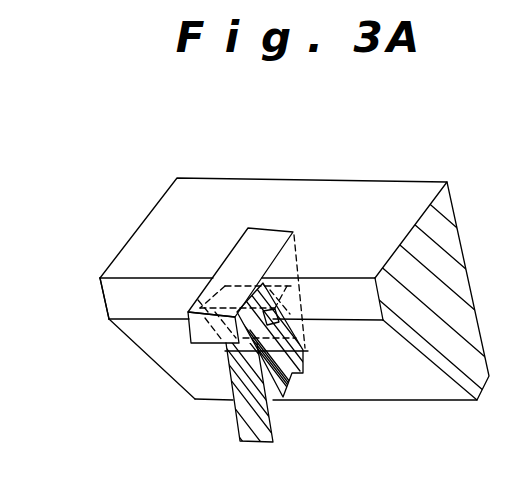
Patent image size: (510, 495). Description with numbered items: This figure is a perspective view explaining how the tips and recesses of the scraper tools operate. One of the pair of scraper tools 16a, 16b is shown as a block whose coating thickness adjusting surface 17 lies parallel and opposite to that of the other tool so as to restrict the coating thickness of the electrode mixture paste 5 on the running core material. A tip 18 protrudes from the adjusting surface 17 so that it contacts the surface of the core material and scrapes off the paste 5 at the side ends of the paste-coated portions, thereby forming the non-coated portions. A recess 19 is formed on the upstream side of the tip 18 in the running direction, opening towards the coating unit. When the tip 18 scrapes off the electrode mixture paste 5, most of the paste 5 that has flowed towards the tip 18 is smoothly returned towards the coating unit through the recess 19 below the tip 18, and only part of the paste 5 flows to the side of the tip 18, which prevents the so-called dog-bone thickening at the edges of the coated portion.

The scraper tool 16a is at (300, 253).
The scraper tool 16b is at (357, 200).
The coating thickness adjusting surface 17 is at (120, 297).
The tip 18 is at (190, 340).
The recess 19 is at (308, 352).
The electrode mixture paste 5 is at (245, 422).